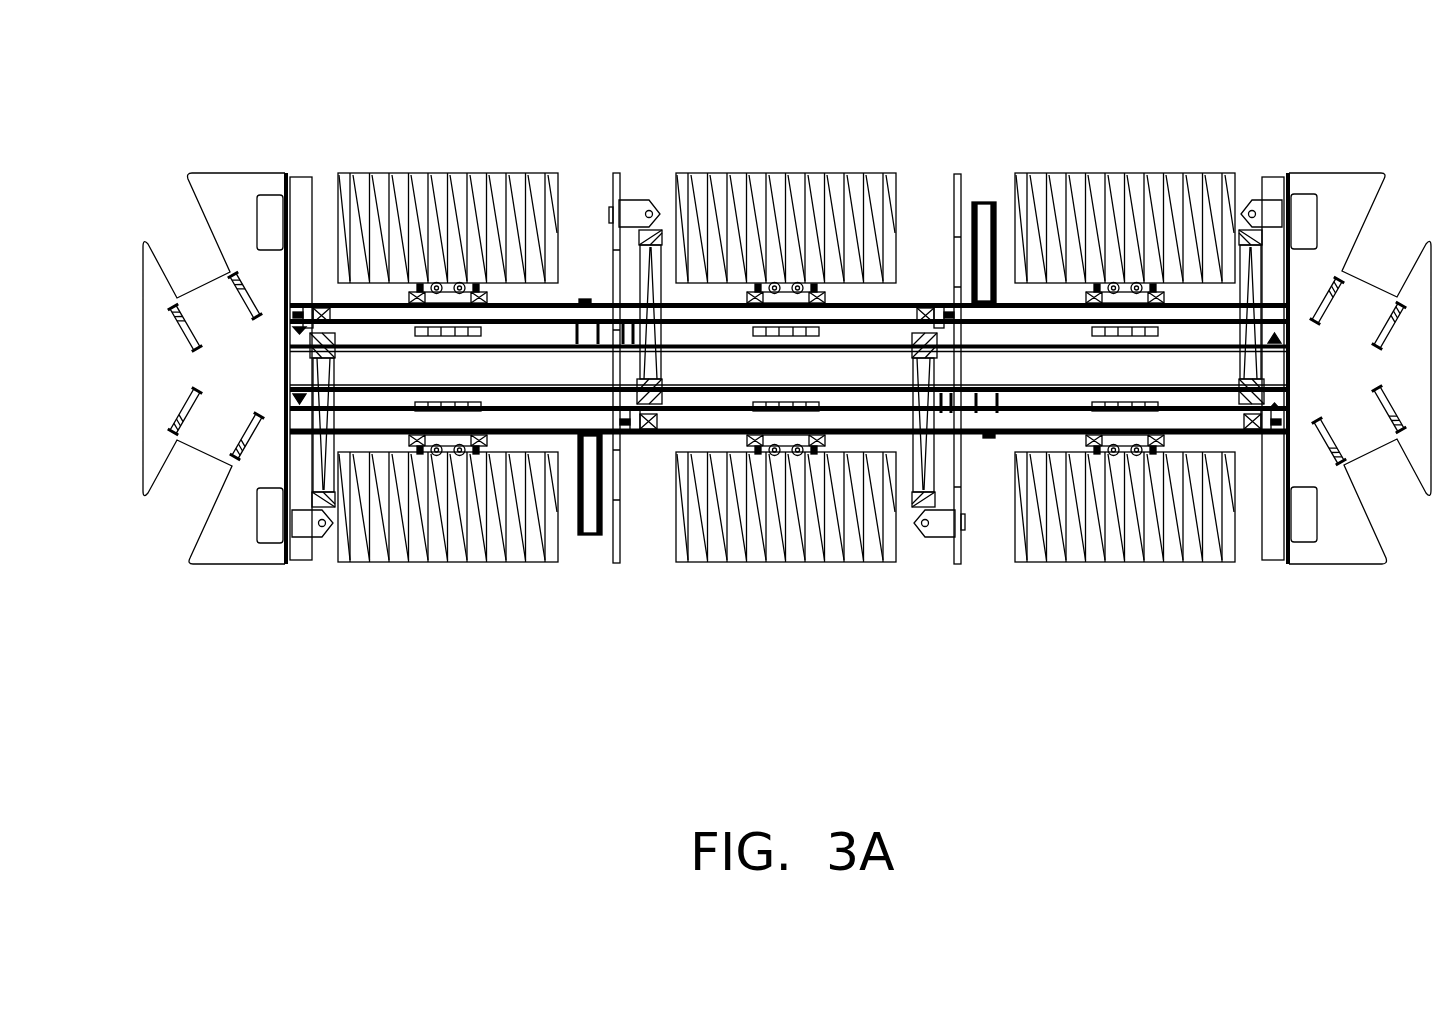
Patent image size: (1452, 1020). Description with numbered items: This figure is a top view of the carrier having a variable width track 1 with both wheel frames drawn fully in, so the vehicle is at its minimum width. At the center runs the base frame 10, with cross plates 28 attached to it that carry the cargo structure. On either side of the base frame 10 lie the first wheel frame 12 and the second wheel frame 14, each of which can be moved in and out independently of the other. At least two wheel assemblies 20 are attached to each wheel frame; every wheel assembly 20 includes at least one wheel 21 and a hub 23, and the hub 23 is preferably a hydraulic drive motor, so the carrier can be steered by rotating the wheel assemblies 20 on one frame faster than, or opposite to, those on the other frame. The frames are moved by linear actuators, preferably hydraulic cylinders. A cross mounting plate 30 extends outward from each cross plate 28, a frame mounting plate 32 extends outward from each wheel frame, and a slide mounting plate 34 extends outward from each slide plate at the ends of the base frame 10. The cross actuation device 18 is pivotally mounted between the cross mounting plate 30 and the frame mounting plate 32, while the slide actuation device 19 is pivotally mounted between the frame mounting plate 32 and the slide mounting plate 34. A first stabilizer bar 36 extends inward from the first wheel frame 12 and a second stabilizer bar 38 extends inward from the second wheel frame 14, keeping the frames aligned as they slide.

The carrier having a variable width track 1 is at (787, 373).
The base frame 10 is at (1013, 372).
The first wheel frame 12 is at (1033, 423).
The second wheel frame 14 is at (579, 298).
The cross actuation device 18 is at (657, 262).
The slide actuation device 19 is at (313, 455).
The wheel assembly 20 is at (1133, 172).
The wheel 21 is at (762, 280).
The hub 23 is at (798, 285).
The cross plate 28 is at (956, 178).
The cross mounting plate 30 is at (636, 205).
The frame mounting plate 32 is at (307, 300).
The slide mounting plate 34 is at (306, 530).
The first stabilizer bar 36 is at (985, 204).
The second stabilizer bar 38 is at (586, 530).